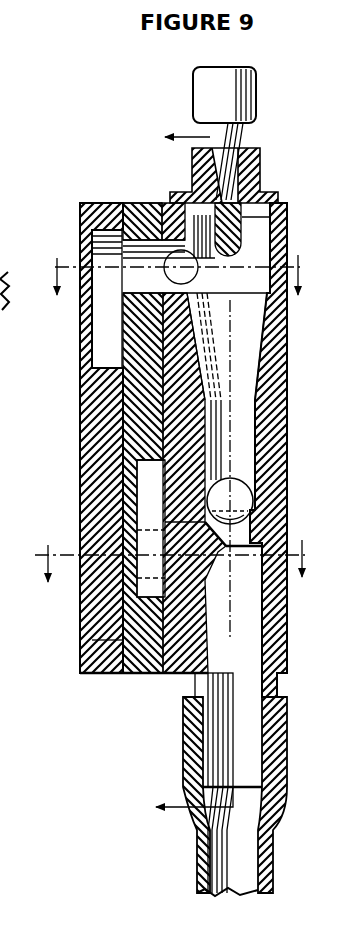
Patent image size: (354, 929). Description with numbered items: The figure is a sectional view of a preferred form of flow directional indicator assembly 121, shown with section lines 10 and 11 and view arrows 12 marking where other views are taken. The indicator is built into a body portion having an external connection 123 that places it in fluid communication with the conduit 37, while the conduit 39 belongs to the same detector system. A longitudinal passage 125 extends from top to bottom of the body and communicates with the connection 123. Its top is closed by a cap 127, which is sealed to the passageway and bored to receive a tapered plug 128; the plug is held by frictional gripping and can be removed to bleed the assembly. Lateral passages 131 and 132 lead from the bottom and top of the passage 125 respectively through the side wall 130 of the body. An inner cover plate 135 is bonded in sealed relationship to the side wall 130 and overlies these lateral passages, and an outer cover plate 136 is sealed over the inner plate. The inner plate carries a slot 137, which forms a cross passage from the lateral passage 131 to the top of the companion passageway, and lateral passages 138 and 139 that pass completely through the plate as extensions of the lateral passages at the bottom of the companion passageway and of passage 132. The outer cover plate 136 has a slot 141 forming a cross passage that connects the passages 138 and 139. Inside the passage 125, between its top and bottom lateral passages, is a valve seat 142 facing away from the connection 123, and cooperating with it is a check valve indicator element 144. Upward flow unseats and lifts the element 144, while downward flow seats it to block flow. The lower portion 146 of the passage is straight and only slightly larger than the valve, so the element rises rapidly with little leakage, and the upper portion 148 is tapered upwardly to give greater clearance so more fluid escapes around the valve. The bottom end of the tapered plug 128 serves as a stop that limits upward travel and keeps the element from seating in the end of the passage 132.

The section line 10- 10 is at (177, 295).
The section line 11- 11 is at (174, 578).
The view direction arrow 12 is at (181, 485).
The conduit 37 is at (195, 878).
The conduit 39 is at (0, 252).
The flow directional indicator assembly 121 is at (70, 446).
The external connection 123 is at (213, 688).
The longitudinal passage 125 is at (203, 411).
The cap 127 is at (191, 178).
The tapered plug 128 is at (244, 137).
The side wall 130 is at (128, 475).
The lateral passage 131 is at (193, 576).
The lateral passage 132 is at (183, 279).
The inner cover plate 135 is at (140, 203).
The outer cover plate 136 is at (97, 204).
The slot 137 is at (145, 509).
The lateral passage 138 is at (122, 607).
The lateral passage 139 is at (196, 266).
The slot 141 is at (103, 356).
The valve seat 142 is at (222, 536).
The check valve indicator element 144 is at (245, 462).
The lower portion of passageway 146 is at (245, 436).
The upper portion of passageway 148 is at (260, 330).